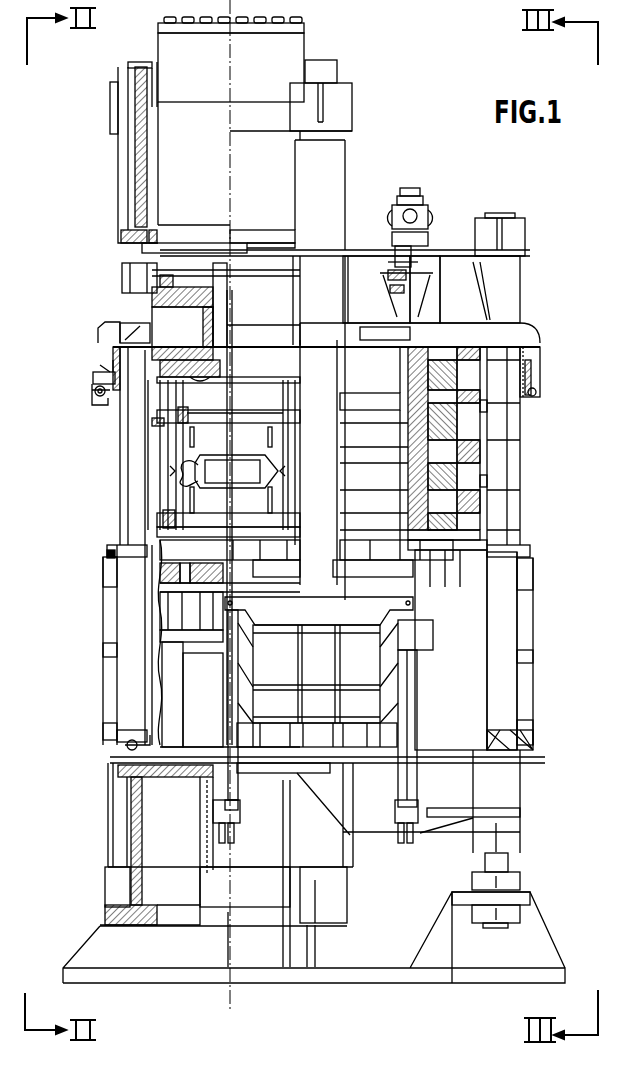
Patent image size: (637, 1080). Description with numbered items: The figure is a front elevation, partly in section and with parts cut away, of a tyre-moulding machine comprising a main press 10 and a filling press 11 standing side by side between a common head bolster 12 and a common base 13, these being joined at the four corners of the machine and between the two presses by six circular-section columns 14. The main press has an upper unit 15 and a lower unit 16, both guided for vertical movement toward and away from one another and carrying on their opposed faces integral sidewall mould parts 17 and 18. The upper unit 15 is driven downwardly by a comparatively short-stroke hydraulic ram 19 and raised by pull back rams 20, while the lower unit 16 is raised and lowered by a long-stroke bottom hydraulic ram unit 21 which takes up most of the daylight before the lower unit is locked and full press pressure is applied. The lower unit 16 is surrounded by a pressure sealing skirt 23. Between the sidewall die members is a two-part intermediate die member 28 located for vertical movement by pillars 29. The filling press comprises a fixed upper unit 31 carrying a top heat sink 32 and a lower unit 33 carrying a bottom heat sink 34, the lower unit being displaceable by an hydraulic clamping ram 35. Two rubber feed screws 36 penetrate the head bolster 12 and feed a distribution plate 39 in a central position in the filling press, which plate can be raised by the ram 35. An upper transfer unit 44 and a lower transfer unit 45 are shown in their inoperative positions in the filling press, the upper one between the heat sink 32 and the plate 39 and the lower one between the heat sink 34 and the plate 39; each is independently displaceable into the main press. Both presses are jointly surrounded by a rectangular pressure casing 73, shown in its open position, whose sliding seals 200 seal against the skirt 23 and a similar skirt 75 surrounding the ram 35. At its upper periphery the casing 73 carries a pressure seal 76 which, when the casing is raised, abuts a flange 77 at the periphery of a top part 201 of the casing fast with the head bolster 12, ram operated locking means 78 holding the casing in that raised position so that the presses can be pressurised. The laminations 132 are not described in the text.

The main press 10 is at (63, 333).
The filling press 11 is at (547, 342).
The head bolster 12 is at (334, 173).
The base 13 is at (100, 957).
The columns 14 is at (62, 822).
The upper unit 15 is at (200, 346).
The lower unit 16 is at (157, 555).
The sidewall mould part 17 is at (225, 365).
The sidewall mould part 18 is at (157, 573).
The hydraulic ram 19 is at (233, 256).
The pull back rams 20 is at (112, 112).
The bottom hydraulic ram unit 21 is at (230, 669).
The pressure sealing skirt 23 is at (150, 695).
The intermediate die member 28 is at (187, 527).
The pillars 29 is at (160, 410).
The fixed upper unit 31 is at (438, 348).
The top heat sink 32 is at (413, 365).
The lower unit 33 is at (488, 543).
The bottom heat sink 34 is at (470, 540).
The hydraulic clamping ram 35 is at (425, 685).
The rubber feed screws 36 is at (425, 236).
The distribution plate 39 is at (485, 452).
The upper transfer unit 44 is at (490, 408).
The lower transfer unit 45 is at (488, 482).
The pressure casing 73 is at (110, 618).
The pressure sealing skirt 75 is at (495, 700).
The pressure seal 76 is at (108, 544).
The flange 77 is at (103, 372).
The locking means 78 is at (93, 398).
The laminations 132 is at (355, 460).
The sliding seals 200 is at (127, 734).
The top part 201 is at (127, 337).